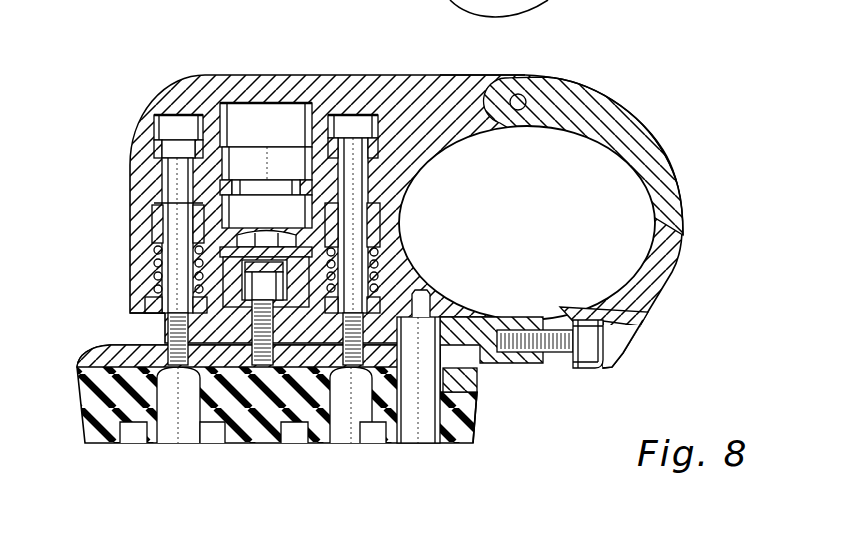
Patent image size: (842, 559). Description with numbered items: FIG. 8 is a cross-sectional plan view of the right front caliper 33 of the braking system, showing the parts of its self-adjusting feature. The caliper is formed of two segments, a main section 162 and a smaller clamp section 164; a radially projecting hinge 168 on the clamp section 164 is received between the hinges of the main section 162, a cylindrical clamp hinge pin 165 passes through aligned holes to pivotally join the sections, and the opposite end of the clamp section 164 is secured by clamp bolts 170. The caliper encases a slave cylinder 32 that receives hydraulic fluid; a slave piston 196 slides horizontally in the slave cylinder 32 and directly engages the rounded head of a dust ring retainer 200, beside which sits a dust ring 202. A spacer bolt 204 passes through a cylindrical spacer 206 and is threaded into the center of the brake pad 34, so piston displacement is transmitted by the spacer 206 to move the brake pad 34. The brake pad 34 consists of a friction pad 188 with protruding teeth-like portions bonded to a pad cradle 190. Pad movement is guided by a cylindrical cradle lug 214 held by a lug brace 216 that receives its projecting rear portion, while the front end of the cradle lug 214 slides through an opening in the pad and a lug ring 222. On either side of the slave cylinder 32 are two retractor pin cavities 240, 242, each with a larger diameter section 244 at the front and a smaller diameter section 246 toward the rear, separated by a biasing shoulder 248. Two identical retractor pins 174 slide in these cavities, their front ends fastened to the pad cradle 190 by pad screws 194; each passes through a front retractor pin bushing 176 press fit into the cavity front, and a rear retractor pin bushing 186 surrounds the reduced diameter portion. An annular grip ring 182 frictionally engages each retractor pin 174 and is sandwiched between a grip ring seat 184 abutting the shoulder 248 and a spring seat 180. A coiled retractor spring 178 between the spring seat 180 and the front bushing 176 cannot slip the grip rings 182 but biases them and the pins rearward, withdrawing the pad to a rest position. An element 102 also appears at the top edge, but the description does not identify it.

The slave cylinder 32 is at (273, 132).
The right front caliper 33 is at (340, 80).
The brake pad 34 is at (490, 399).
The linkage 102 is at (567, 3).
The main section 162 is at (420, 92).
The clamp section 164 is at (648, 150).
The clamp hinge pin 165 is at (527, 96).
The hinge 168 is at (500, 98).
The clamp bolts 170 is at (590, 343).
The retractor pins 174 is at (167, 170).
The front retractor pin bushings 176 is at (140, 307).
The retractor spring 178 is at (150, 275).
The spring seat 180 is at (377, 233).
The grip ring 182 is at (157, 225).
The grip ring seat 184 is at (400, 207).
The rear retractor pin bushings 186 is at (368, 148).
The friction pad 188 is at (250, 435).
The pad cradle 190 is at (80, 365).
The pad screws 194 is at (167, 333).
The slave piston 196 is at (243, 118).
The dust ring retainer 200 is at (266, 230).
The dust ring 202 is at (305, 250).
The spacer bolt 204 is at (260, 353).
The spacer 206 is at (290, 368).
The cradle lug 214 is at (418, 410).
The lug brace 216 is at (507, 315).
The lug ring 222 is at (477, 378).
The retractor pin cavity 240 is at (157, 180).
The retractor pin cavity 242 is at (375, 178).
The larger diameter section 244 is at (153, 250).
The smaller diameter section 246 is at (173, 122).
The biasing shoulder 248 is at (157, 204).